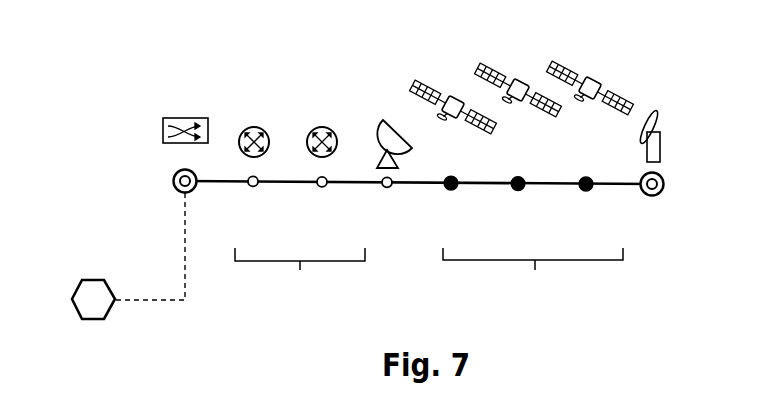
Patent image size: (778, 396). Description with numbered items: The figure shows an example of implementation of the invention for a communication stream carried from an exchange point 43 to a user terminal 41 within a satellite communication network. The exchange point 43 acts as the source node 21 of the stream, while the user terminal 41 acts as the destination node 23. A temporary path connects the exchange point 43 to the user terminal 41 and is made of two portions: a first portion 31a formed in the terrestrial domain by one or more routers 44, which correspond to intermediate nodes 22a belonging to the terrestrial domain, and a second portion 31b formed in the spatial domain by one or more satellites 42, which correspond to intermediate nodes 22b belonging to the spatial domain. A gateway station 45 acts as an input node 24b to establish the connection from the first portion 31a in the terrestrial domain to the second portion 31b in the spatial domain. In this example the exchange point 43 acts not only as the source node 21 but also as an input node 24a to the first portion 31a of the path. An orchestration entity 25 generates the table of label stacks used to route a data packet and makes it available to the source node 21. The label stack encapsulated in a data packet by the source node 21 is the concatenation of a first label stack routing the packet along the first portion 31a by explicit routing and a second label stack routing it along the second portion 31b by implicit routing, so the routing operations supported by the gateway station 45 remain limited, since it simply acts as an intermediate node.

The source node 21 is at (130, 190).
The input node 24a is at (175, 182).
The intermediate nodes 22a is at (321, 187).
The intermediate nodes 22b is at (517, 190).
The destination node 23 is at (663, 195).
The input node 24b is at (388, 187).
The orchestration entity 25 is at (78, 287).
The first portion 31a is at (300, 271).
The second portion 31b is at (533, 272).
The user terminal 41 is at (662, 143).
The satellites 42 is at (503, 75).
The exchange point 43 is at (163, 129).
The routers 44 is at (258, 126).
The gateway station 45 is at (383, 118).